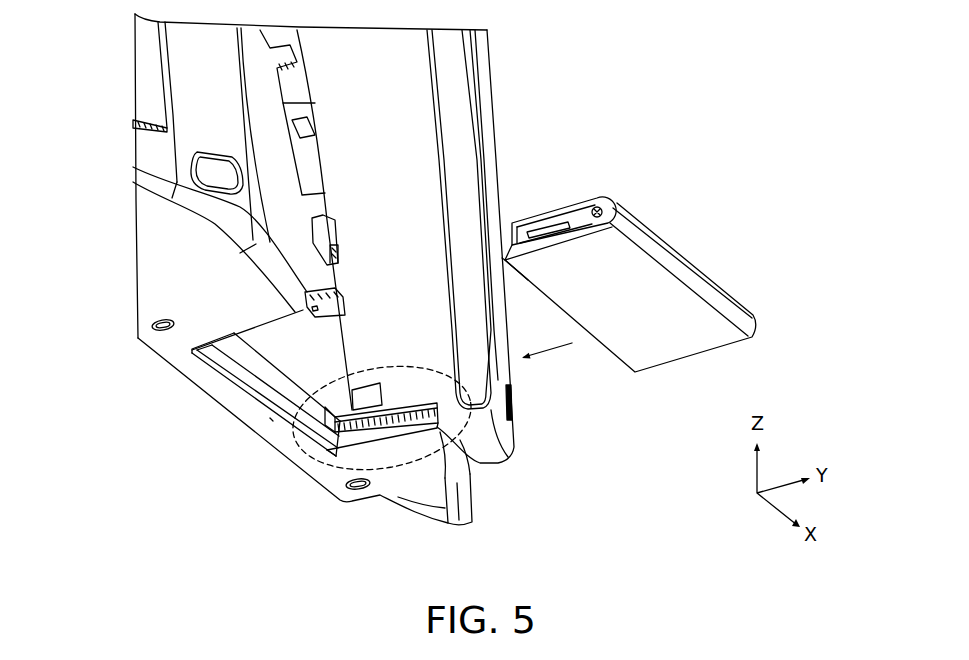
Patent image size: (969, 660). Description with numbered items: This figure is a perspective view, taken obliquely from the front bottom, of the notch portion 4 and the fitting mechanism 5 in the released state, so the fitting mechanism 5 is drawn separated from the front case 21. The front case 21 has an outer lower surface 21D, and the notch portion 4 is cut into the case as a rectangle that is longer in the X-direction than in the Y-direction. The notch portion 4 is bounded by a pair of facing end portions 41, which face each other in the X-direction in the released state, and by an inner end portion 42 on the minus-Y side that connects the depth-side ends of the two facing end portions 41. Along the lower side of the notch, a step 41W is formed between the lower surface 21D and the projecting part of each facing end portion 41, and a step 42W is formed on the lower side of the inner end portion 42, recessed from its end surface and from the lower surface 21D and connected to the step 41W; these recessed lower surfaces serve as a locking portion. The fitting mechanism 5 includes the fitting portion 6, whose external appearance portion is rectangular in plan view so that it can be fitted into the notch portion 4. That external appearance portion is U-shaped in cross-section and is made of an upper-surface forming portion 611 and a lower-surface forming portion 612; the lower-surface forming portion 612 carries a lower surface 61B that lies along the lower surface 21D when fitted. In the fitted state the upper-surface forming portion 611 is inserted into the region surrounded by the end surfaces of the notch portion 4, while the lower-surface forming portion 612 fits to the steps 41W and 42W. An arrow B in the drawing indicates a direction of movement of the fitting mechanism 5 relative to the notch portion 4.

The front case 21 is at (487, 98).
The lower surface 21D is at (225, 393).
The notch portion 4 is at (332, 337).
The facing end portion 41 is at (335, 402).
The step 41W is at (382, 452).
The inner end portion 42 is at (278, 362).
The step 42W is at (272, 420).
The fitting mechanism 5 is at (702, 249).
The fitting portion 6 is at (730, 312).
The lower surface 61B is at (663, 343).
The upper-surface forming portion 611 is at (545, 213).
The lower-surface forming portion 612 is at (523, 267).
The opening direction B is at (441, 453).